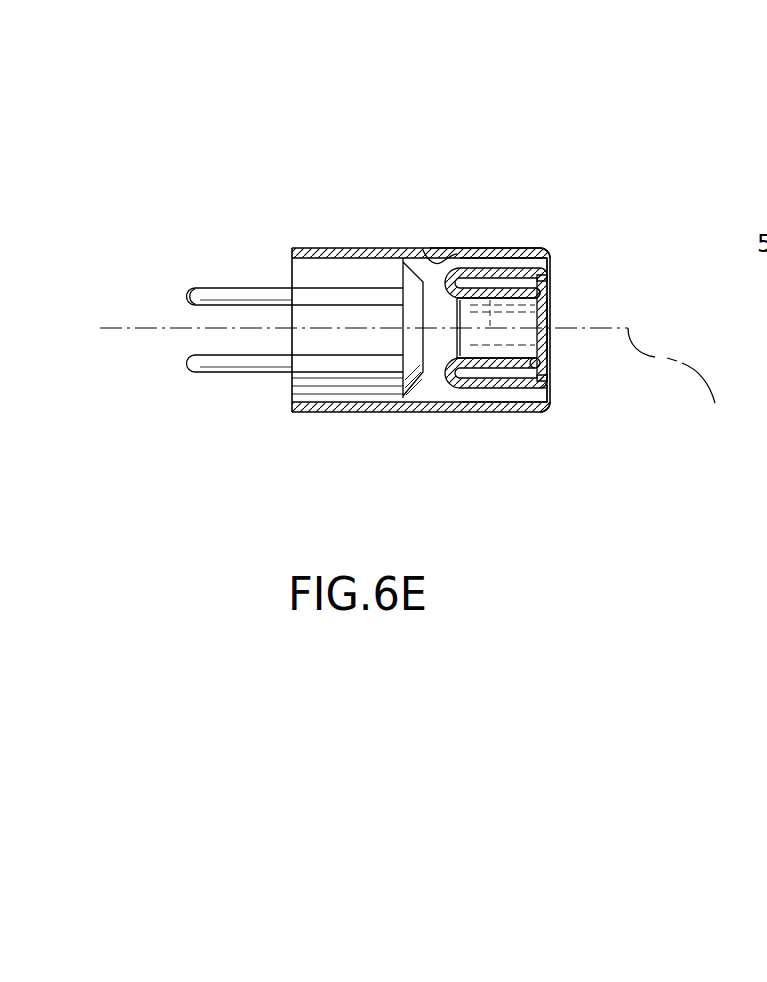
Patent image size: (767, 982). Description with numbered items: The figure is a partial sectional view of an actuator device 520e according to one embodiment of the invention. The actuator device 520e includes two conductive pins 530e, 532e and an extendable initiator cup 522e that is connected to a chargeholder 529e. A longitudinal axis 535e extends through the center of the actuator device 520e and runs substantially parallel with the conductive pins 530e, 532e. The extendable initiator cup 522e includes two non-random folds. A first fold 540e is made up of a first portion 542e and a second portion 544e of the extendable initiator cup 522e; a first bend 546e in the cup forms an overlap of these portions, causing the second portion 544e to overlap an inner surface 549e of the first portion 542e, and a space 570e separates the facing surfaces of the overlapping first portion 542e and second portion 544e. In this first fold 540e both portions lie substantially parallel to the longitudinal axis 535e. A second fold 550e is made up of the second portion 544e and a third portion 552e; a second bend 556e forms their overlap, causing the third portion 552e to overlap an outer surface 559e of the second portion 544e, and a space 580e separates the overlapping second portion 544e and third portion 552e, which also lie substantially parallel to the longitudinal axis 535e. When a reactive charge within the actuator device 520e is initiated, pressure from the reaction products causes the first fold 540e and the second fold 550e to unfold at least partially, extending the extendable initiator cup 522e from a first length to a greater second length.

The actuator device 520e is at (170, 182).
The extendable initiator cup 522e is at (320, 250).
The chargeholder 529e is at (292, 272).
The conductive pin 530e is at (187, 365).
The conductive pin 532e is at (187, 292).
The longitudinal axis 535e is at (692, 384).
The first fold 540e is at (528, 238).
The first portion 542e is at (482, 250).
The second portion 544e is at (533, 292).
The first bend 546e is at (550, 262).
The inner surface 549e is at (424, 250).
The second fold 550e is at (448, 316).
The third portion 552e is at (545, 356).
The second bend 556e is at (466, 386).
The outer surface 559e is at (540, 384).
The space 570e is at (507, 252).
The space 580e is at (543, 312).